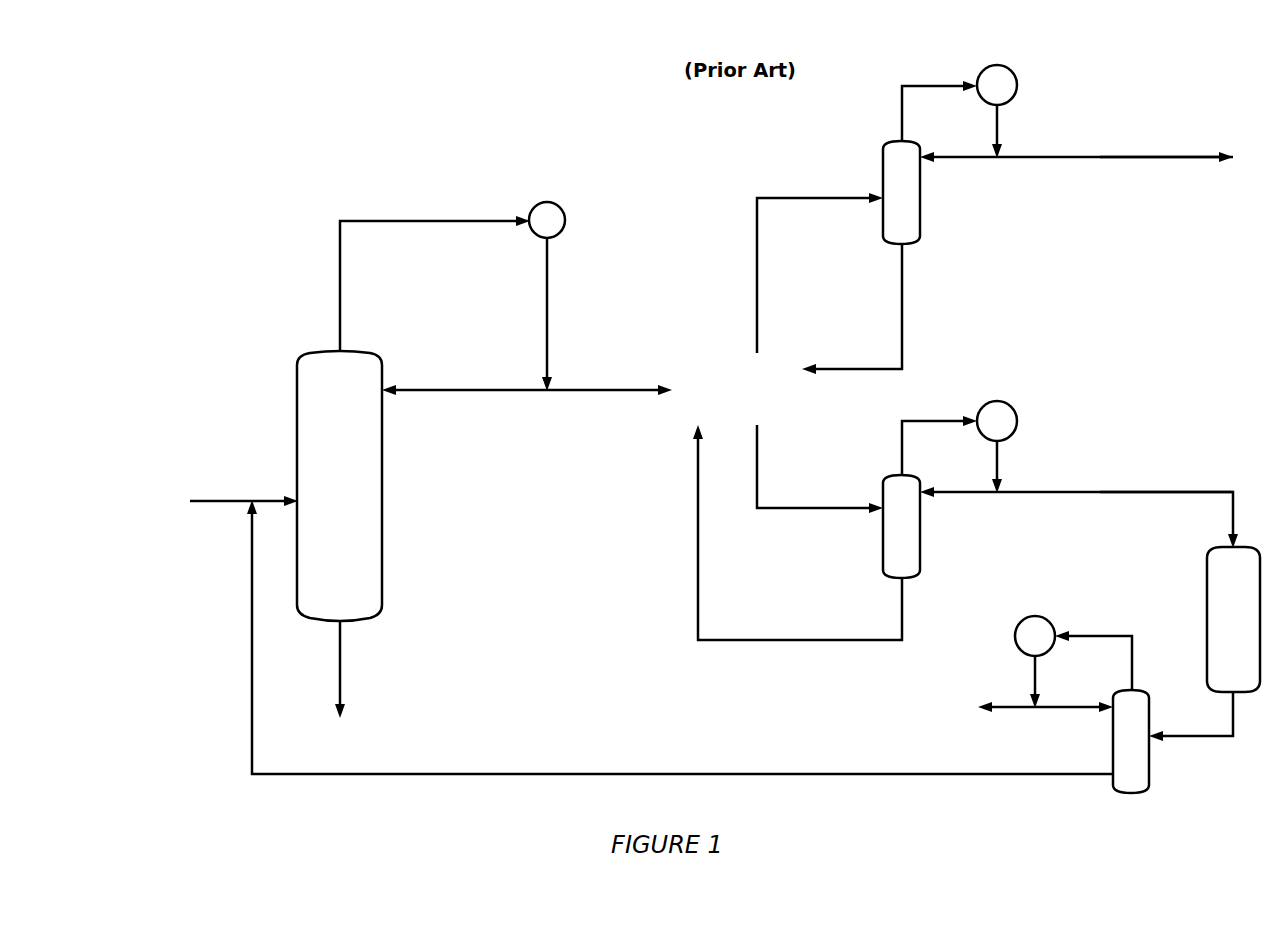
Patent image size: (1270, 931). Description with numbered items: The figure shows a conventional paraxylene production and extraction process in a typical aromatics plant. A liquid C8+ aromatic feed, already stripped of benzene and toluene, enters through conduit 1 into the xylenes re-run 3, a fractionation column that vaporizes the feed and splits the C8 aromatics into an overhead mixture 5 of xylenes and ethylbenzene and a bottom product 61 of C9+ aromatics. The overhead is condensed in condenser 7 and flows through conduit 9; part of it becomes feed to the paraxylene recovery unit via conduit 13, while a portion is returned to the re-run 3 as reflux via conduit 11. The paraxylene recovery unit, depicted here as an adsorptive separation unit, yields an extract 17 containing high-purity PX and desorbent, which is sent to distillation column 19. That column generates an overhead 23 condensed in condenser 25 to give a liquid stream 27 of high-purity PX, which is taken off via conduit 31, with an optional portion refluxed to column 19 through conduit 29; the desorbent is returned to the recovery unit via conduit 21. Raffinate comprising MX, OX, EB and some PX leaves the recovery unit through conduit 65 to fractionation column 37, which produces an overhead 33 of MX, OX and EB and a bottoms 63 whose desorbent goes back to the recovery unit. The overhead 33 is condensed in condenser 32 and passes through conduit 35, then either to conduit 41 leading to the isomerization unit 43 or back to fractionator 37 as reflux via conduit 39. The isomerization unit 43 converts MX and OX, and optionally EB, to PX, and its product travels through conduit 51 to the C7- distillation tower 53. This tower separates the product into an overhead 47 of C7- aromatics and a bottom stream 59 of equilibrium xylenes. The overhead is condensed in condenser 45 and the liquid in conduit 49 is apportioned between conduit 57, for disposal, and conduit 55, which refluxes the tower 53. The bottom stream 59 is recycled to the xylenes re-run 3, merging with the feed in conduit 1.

The conduit 1 is at (222, 500).
The xylenes re-run 3 is at (330, 495).
The overhead mixture 5 is at (340, 283).
The condenser 7 is at (566, 218).
The conduit 9 is at (547, 293).
The conduit 11 is at (470, 391).
The conduit 13 is at (755, 431).
The extract conduit 17 is at (757, 287).
The distillation column 19 is at (921, 220).
The conduit 21 is at (902, 312).
The overhead 23 is at (902, 111).
The condenser 25 is at (1017, 86).
The liquid stream 27 is at (997, 122).
The conduit 29 is at (972, 158).
The conduit 31 is at (1173, 157).
The condenser 32 is at (1017, 420).
The overhead 33 is at (902, 445).
The conduit 35 is at (997, 457).
The fractionation column 37 is at (921, 553).
The conduit 39 is at (972, 493).
The conduit 41 is at (1173, 492).
The isomerization unit 43 is at (1218, 629).
The condenser 45 is at (1015, 634).
The overhead 47 is at (1132, 665).
The conduit 49 is at (1035, 672).
The conduit 51 is at (1205, 737).
The C7- distillation tower 53 is at (1150, 772).
The conduit 55 is at (1070, 708).
The conduit 57 is at (1010, 708).
The bottom stream 59 is at (500, 773).
The bottom product 61 is at (340, 667).
The bottoms 63 is at (698, 548).
The raffinate conduit 65 is at (790, 509).